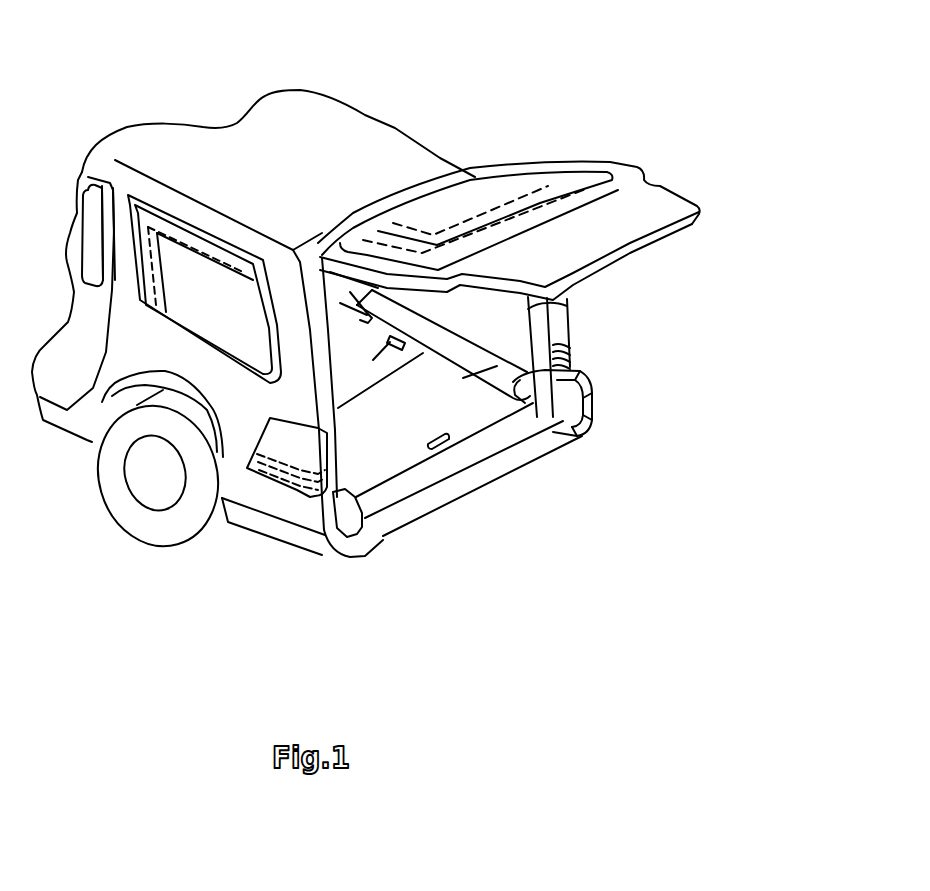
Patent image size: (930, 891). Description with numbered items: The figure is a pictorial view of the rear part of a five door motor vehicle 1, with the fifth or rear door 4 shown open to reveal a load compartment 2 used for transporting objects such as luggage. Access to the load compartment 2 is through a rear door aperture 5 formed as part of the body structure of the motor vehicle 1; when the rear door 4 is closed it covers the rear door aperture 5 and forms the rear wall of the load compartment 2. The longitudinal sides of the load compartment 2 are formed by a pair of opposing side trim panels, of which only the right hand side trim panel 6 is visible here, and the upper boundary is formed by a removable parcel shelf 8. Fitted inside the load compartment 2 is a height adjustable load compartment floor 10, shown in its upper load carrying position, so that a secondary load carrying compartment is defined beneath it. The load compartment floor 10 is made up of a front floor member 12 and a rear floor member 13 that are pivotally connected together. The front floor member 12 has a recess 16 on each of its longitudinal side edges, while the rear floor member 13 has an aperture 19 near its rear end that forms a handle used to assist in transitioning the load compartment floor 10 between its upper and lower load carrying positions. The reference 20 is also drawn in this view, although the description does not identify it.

The motor vehicle 1 is at (170, 78).
The load compartment 2 is at (503, 318).
The rear door 4 is at (653, 207).
The rear door aperture 5 is at (597, 410).
The side trim panel 6 is at (465, 378).
The removable parcel shelf 8 is at (328, 288).
The load compartment floor 10 is at (364, 458).
The front floor member 12 is at (341, 365).
The rear floor member 13 is at (487, 409).
The recess 16 is at (373, 360).
The aperture 19 is at (447, 438).
The cross member 20 is at (367, 320).